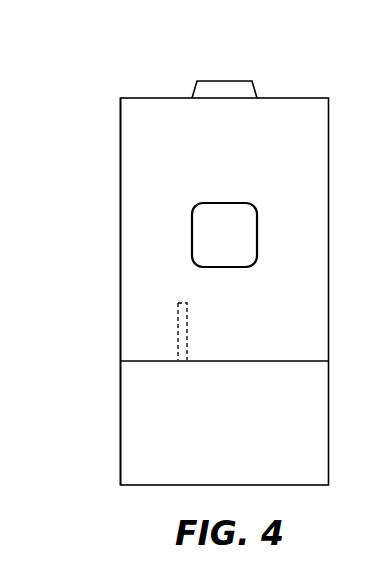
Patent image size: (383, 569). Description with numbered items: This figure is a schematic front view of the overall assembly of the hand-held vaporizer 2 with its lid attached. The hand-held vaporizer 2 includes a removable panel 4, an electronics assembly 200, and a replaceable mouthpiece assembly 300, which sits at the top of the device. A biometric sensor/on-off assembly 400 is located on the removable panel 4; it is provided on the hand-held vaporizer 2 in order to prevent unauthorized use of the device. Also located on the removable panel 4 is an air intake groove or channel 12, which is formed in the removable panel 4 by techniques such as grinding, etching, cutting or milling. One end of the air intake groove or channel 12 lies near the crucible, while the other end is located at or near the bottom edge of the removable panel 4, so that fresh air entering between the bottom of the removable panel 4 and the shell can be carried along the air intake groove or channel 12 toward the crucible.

The hand-held vaporizer 2 is at (101, 104).
The removable panel 4 is at (120, 177).
The replaceable mouthpiece assembly 300 is at (222, 71).
The biometric sensor/on-off assembly 400 is at (190, 221).
The air intake groove or channel 12 is at (178, 318).
The electronics assembly 200 is at (240, 434).